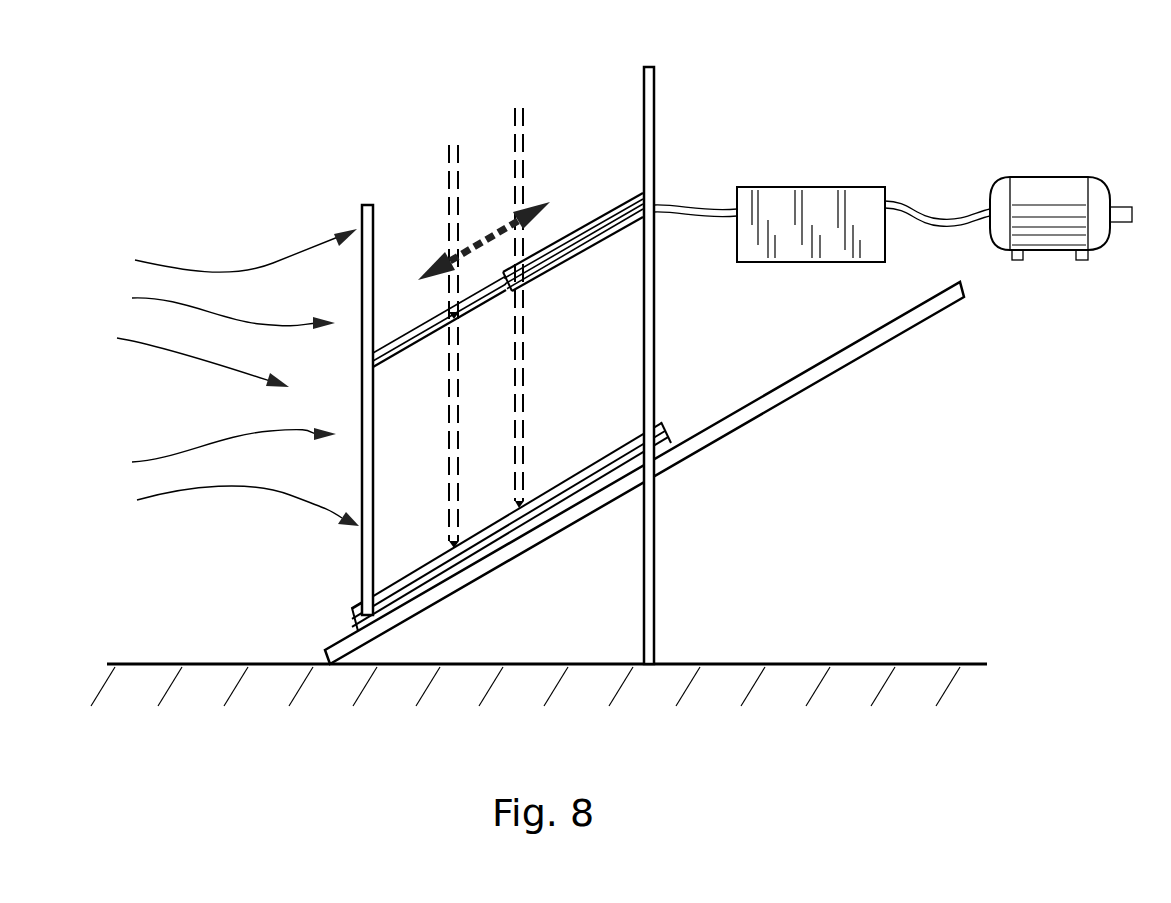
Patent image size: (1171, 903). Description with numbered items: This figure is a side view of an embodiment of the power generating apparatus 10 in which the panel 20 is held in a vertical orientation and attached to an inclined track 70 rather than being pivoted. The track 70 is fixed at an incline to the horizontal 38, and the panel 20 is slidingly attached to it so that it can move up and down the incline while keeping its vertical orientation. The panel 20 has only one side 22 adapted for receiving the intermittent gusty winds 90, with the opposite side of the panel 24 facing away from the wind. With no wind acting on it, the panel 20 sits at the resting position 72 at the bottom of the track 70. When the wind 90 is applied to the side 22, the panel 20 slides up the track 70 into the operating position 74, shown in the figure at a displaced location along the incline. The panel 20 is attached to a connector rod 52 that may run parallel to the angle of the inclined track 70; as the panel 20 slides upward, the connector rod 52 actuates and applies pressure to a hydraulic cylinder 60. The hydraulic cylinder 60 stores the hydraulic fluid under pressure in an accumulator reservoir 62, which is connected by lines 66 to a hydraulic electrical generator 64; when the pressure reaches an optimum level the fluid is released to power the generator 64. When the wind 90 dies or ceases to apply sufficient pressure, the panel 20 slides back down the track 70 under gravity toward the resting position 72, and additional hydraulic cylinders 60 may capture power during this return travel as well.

The power generating apparatus 10 is at (280, 115).
The panel 20 is at (368, 562).
The side of the panel 22 is at (363, 538).
The side of the panel opposite the wind-receiving side 24 is at (373, 530).
The horizontal 38 is at (978, 661).
The connector rod 52 is at (389, 342).
The hydraulic cylinder 60 is at (587, 233).
The accumulator reservoir 62 is at (822, 202).
The hydraulic electrical generator 64 is at (1048, 190).
The conduit 66 is at (697, 207).
The track 70 is at (582, 478).
The resting position 72 is at (335, 213).
The operating position 74 is at (521, 95).
The wind 90 is at (128, 337).